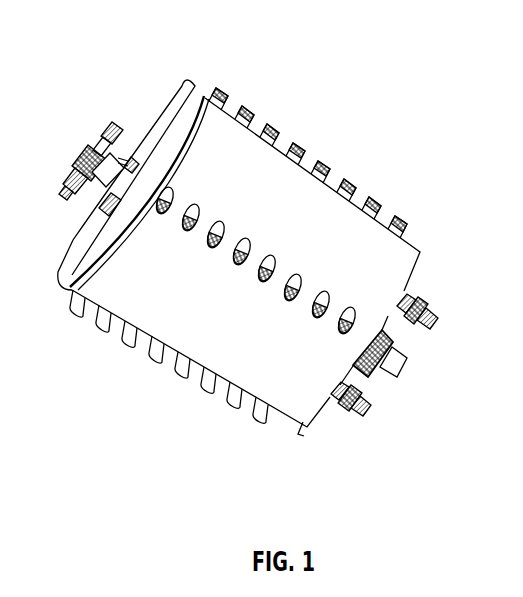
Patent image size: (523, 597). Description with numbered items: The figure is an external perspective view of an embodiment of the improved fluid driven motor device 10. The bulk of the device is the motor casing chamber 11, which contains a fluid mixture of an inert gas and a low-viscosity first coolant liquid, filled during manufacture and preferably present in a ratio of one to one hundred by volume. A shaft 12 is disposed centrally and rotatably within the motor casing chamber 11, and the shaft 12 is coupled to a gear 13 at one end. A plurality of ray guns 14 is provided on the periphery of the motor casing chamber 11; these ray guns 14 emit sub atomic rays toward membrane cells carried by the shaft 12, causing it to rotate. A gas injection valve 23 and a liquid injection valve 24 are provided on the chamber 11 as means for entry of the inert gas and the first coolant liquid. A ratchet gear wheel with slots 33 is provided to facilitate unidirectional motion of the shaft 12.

The fluid driven motor device 10 is at (336, 83).
The motor casing chamber 11 is at (303, 422).
The shaft 12 is at (393, 362).
The gear 13 is at (105, 134).
The ray guns 14 is at (333, 163).
The gas injection valve 23 is at (358, 423).
The liquid injection valve 24 is at (433, 330).
The ratchet gear wheel with slots 33 is at (366, 374).